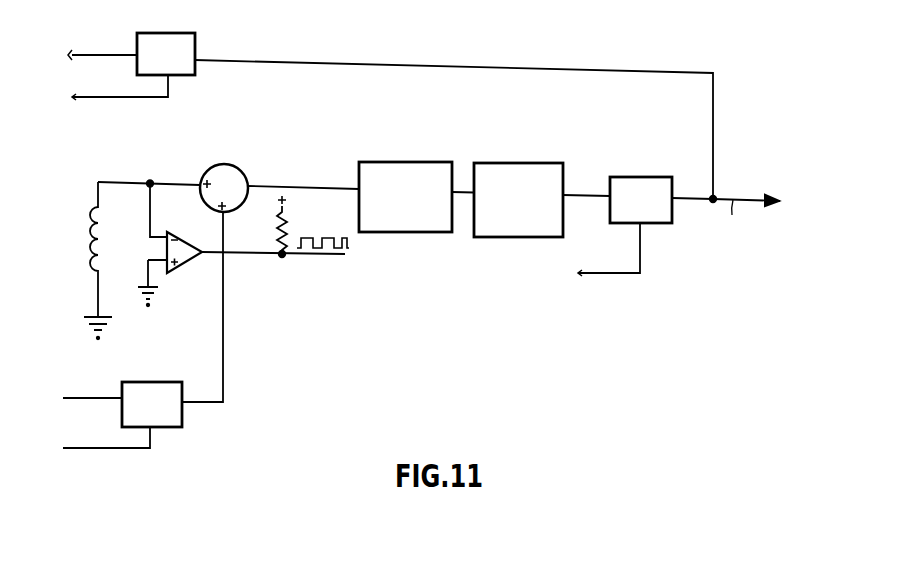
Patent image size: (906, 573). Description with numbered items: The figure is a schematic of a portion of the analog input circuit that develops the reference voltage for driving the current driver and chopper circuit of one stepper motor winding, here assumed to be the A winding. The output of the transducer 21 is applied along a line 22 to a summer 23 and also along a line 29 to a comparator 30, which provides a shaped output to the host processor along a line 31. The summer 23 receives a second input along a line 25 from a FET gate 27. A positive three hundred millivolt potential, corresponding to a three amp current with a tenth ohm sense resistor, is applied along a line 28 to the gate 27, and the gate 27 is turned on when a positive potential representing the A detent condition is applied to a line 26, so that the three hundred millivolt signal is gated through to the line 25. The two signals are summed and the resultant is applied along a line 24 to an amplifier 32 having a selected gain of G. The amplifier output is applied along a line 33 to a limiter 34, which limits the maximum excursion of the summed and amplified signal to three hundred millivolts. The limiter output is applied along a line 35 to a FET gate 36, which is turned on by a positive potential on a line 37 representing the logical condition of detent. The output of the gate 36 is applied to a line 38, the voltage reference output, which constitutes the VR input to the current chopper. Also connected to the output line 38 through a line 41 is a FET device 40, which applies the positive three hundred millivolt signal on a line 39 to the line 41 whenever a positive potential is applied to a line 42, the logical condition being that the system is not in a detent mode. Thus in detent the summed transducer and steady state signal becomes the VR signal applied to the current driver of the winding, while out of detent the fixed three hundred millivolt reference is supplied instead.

The transducer 21 is at (84, 243).
The line 22 is at (135, 182).
The summer 23 is at (228, 164).
The line 24 is at (330, 188).
The line 25 is at (223, 234).
The line 26 is at (137, 450).
The FET gate 27 is at (142, 383).
The line 28 is at (90, 398).
The line 29 is at (150, 214).
The comparator 30 is at (187, 263).
The line 31 is at (236, 256).
The amplifier 32 is at (389, 164).
The line 33 is at (462, 190).
The limiter 34 is at (508, 170).
The line 35 is at (576, 196).
The FET gate 36 is at (625, 178).
The line 37 is at (598, 274).
The line 38 is at (688, 199).
The line 39 is at (75, 53).
The FET device 40 is at (169, 33).
The line 41 is at (219, 60).
The line 42 is at (78, 97).